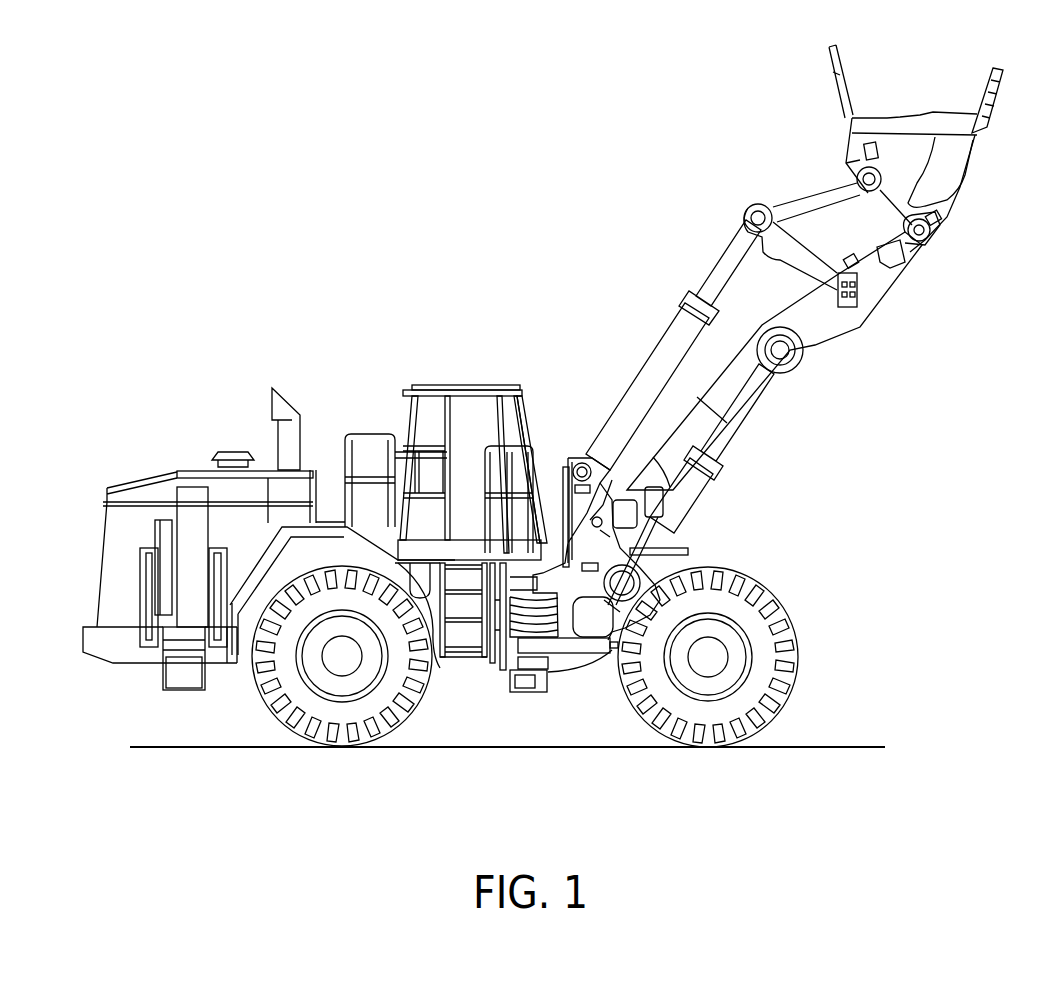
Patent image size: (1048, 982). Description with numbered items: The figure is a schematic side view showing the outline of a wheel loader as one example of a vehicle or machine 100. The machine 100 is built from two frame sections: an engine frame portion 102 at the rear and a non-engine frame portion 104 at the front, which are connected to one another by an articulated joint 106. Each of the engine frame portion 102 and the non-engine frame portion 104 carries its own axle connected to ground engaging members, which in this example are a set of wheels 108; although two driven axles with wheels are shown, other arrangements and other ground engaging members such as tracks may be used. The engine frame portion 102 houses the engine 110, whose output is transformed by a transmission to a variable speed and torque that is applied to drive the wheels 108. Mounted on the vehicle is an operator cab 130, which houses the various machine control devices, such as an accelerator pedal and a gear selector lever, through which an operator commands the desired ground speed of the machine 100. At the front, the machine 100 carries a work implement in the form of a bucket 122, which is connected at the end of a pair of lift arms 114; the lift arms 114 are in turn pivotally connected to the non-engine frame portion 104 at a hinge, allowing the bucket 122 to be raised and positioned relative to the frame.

The machine 100 is at (648, 118).
The engine frame portion 102 is at (204, 385).
The non-engine frame portion 104 is at (573, 680).
The articulated joint 106 is at (526, 705).
The wheels 108 is at (410, 718).
The engine 110 is at (197, 467).
The lift arms 114 is at (810, 326).
The bucket 122 is at (888, 118).
The operator cab 130 is at (459, 383).